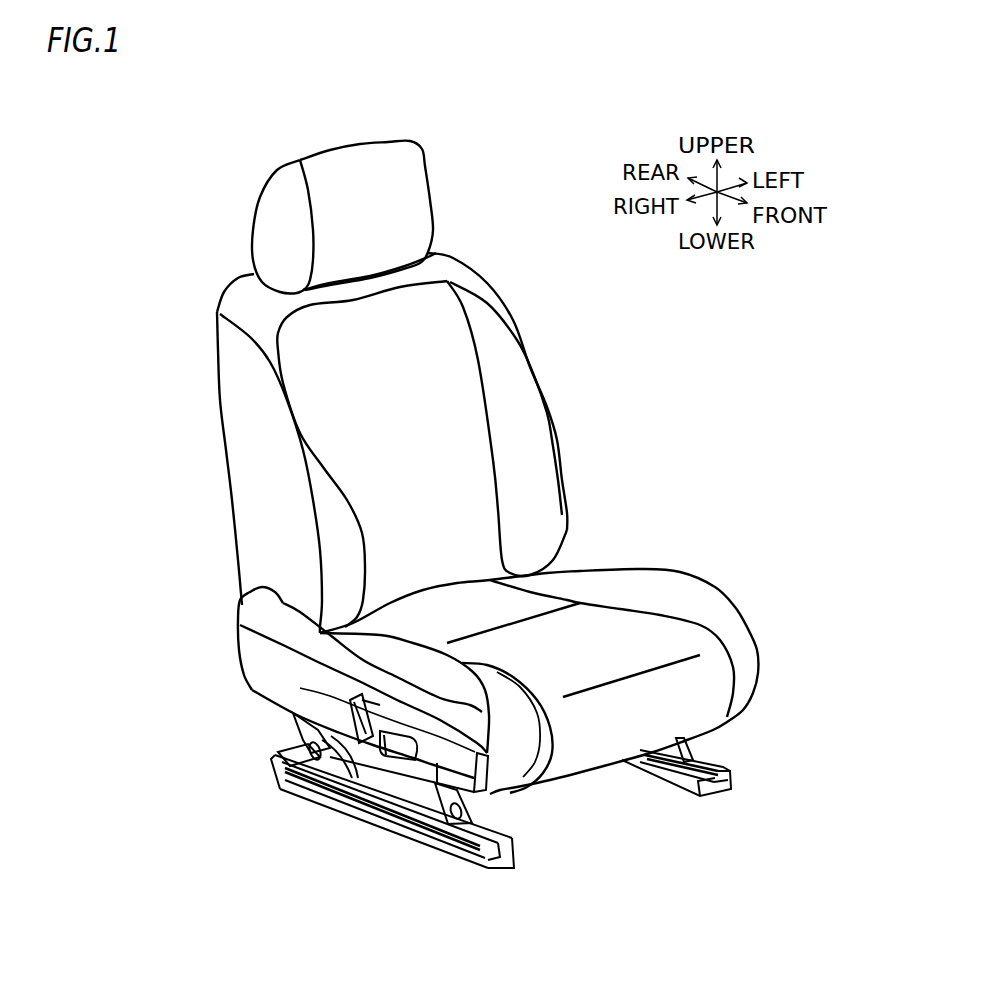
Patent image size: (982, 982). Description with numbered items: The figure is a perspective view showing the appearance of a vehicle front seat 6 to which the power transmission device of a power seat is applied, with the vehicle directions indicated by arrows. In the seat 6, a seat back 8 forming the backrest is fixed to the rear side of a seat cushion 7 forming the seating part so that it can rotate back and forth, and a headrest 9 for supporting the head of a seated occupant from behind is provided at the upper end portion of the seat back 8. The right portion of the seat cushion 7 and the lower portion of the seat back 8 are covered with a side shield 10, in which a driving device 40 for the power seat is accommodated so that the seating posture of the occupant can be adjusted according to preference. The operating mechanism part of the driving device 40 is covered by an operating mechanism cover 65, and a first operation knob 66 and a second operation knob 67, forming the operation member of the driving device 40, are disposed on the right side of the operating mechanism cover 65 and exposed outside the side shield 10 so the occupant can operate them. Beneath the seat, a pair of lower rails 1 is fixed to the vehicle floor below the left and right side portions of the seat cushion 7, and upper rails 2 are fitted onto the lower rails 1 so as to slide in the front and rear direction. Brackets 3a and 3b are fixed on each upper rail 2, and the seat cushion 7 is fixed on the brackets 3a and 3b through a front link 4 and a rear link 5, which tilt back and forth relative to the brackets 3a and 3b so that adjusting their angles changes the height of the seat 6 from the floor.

The lower rail 1 is at (495, 862).
The upper rail 2 is at (275, 760).
The bracket 3a is at (437, 822).
The bracket 3b is at (293, 755).
The front link 4 is at (442, 783).
The rear link 5 is at (303, 735).
The seat 6 is at (722, 588).
The seat cushion 7 is at (637, 567).
The seat back 8 is at (543, 383).
The headrest 9 is at (407, 200).
The side shield 10 is at (250, 655).
The driving device 40 is at (336, 705).
The operating mechanism cover 65 is at (393, 723).
The first operation knob 66 is at (411, 736).
The second operation knob 67 is at (374, 702).